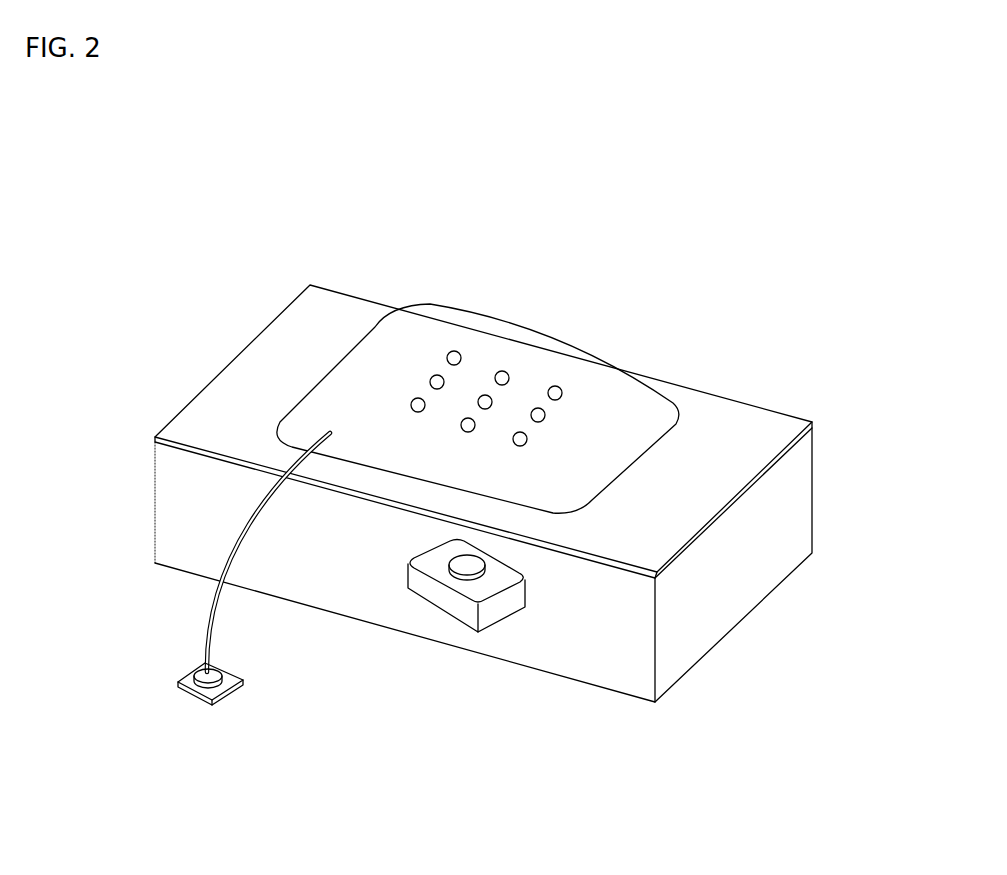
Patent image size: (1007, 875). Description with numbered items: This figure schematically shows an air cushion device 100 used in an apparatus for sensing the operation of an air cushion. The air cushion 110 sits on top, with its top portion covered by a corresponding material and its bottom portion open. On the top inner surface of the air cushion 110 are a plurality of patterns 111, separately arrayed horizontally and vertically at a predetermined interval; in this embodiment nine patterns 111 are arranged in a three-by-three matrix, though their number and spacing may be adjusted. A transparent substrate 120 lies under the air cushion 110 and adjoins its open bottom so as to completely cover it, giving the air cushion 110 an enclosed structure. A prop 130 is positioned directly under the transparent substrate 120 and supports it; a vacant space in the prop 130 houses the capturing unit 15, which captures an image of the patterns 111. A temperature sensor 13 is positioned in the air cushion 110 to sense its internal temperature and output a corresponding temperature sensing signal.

The air cushion device 100 is at (548, 250).
The air cushion 110 is at (620, 385).
The pattern 111 is at (411, 401).
The transparent substrate 120 is at (210, 420).
The prop 130 is at (193, 488).
The temperature sensor 13 is at (225, 692).
The capturing unit 15 is at (498, 613).